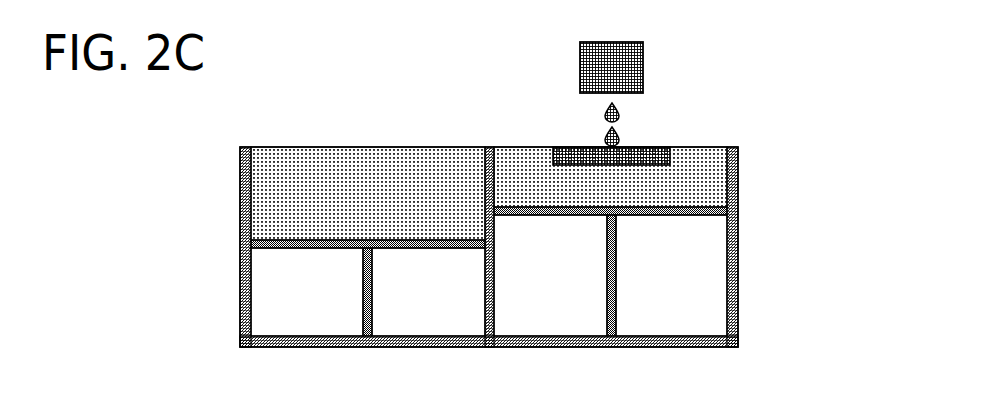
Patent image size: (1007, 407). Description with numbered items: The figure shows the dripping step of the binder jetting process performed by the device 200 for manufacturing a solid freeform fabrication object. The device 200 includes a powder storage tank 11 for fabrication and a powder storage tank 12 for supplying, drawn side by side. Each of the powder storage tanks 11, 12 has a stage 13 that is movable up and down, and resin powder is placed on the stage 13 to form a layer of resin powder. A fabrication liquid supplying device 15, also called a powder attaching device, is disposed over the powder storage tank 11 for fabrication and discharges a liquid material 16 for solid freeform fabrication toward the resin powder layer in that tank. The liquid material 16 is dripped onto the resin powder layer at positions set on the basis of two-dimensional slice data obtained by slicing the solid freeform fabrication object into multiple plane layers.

The device for manufacturing a solid freeform fabrication object 200 is at (549, 182).
The powder storage tank for fabrication 11 is at (700, 153).
The powder storage tank for supplying 12 is at (433, 153).
The stage 13 is at (331, 249).
The fabrication liquid supplying device 15 is at (578, 70).
The liquid material for solid freeform fabrication 16 is at (622, 138).